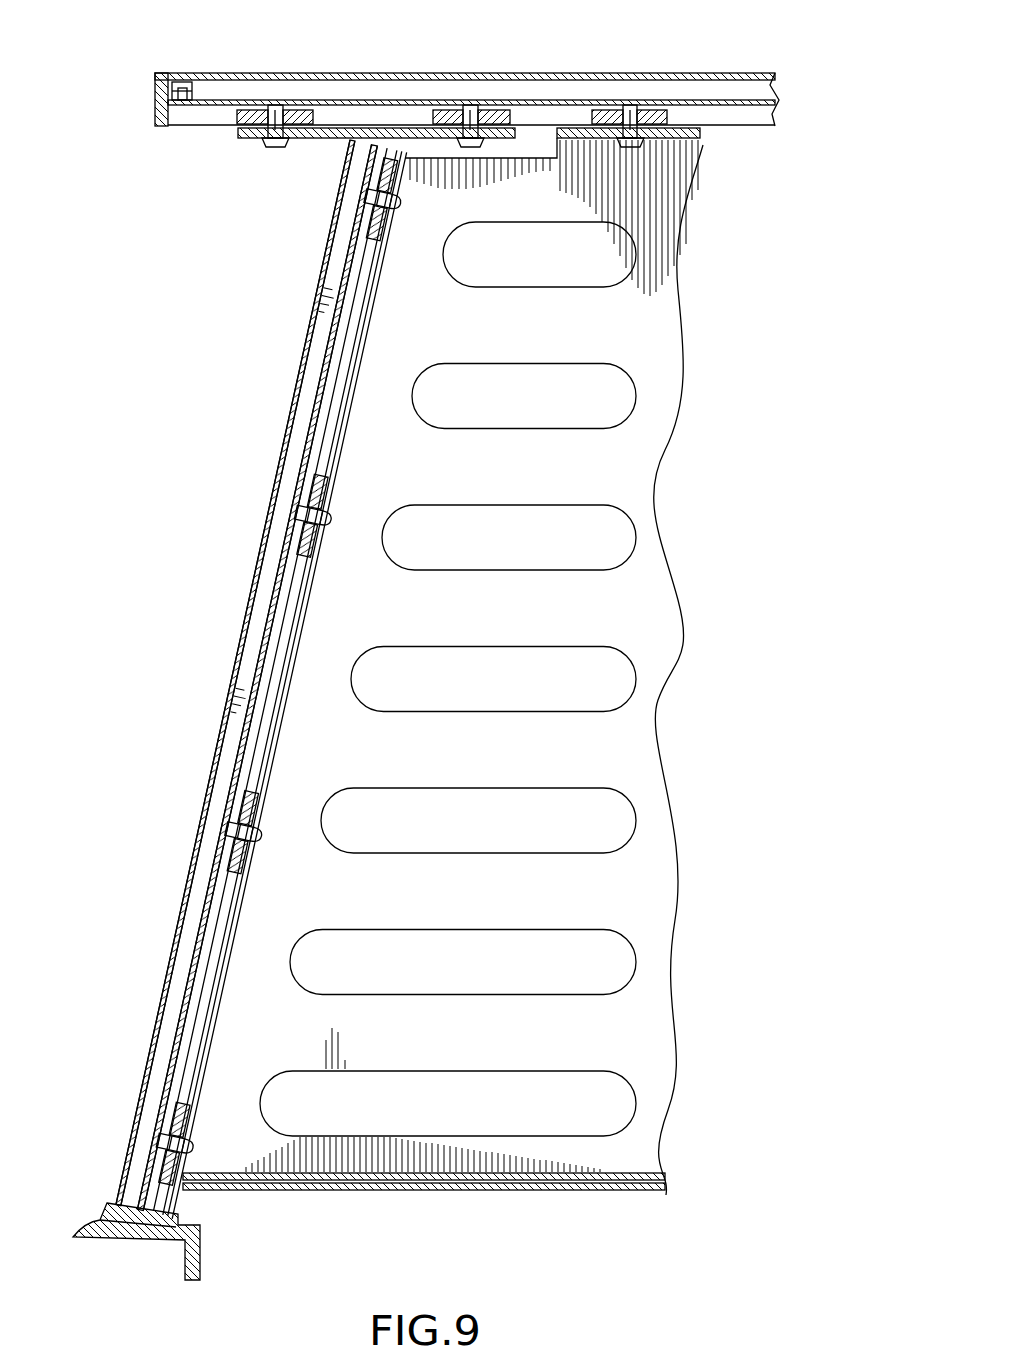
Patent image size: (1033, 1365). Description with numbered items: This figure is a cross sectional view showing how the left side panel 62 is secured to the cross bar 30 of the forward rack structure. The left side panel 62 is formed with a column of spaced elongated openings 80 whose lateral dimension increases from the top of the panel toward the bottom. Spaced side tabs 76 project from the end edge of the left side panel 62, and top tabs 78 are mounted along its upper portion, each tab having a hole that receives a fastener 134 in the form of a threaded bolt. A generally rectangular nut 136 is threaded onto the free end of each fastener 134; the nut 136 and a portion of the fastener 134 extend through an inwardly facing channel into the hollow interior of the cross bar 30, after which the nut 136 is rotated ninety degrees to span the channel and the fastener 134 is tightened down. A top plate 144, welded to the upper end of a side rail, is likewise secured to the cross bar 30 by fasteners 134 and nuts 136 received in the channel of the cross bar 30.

The cross bar 30 is at (720, 74).
The left side panel 62 is at (707, 497).
The side tab 76 is at (383, 232).
The top tab 78 is at (683, 133).
The opening 80 is at (608, 268).
The fastener 134 is at (278, 113).
The nut 136 is at (250, 113).
The top plate 144 is at (245, 141).